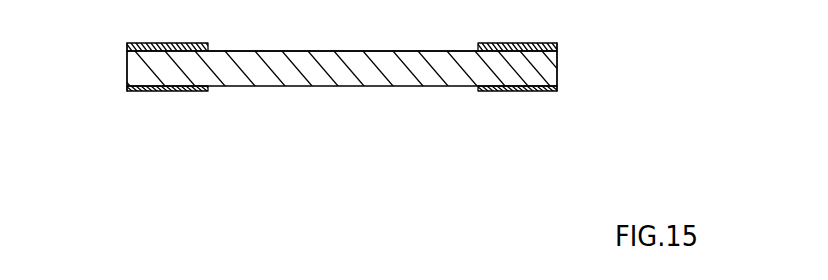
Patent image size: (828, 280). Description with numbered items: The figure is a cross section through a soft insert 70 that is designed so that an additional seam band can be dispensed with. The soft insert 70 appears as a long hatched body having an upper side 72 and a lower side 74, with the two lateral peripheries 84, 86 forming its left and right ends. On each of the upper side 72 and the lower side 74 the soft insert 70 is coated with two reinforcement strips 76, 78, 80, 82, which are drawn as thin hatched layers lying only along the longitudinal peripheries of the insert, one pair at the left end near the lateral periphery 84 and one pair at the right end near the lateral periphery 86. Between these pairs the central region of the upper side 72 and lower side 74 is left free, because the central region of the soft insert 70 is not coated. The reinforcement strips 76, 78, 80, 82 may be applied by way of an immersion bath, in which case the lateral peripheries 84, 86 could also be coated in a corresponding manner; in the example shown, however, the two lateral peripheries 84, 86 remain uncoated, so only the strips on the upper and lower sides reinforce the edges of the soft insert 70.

The soft insert 70 is at (308, 140).
The upper side 72 is at (366, 47).
The lower side 74 is at (302, 86).
The reinforcement strip 76 is at (191, 44).
The reinforcement strip 78 is at (492, 44).
The reinforcement strip 80 is at (172, 91).
The reinforcement strip 82 is at (500, 91).
The lateral periphery 84 is at (126, 66).
The lateral periphery 86 is at (553, 66).